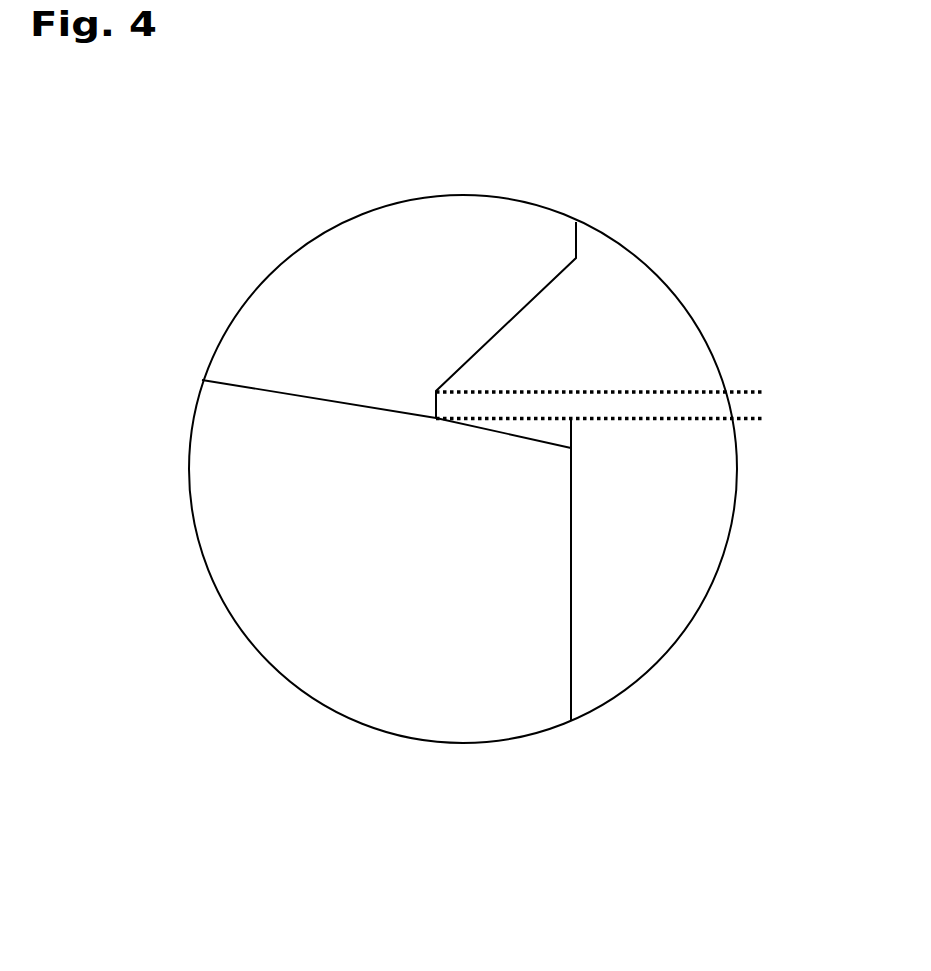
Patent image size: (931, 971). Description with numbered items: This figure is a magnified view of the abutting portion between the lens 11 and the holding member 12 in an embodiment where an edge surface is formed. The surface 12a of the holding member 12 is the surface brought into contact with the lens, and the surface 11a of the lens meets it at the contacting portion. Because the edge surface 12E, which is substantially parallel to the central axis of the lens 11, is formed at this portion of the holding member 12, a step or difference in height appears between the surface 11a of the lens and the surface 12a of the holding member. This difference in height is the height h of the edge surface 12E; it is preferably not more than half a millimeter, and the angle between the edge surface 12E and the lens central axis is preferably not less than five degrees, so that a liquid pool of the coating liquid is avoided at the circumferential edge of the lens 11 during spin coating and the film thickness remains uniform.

The lens 11 is at (317, 662).
The holding member 12 is at (660, 602).
The surface of the lens 11a is at (340, 398).
The surface of the holding member 12a is at (512, 318).
The edge surface 12E is at (423, 405).
The height of the edge surface h is at (766, 393).